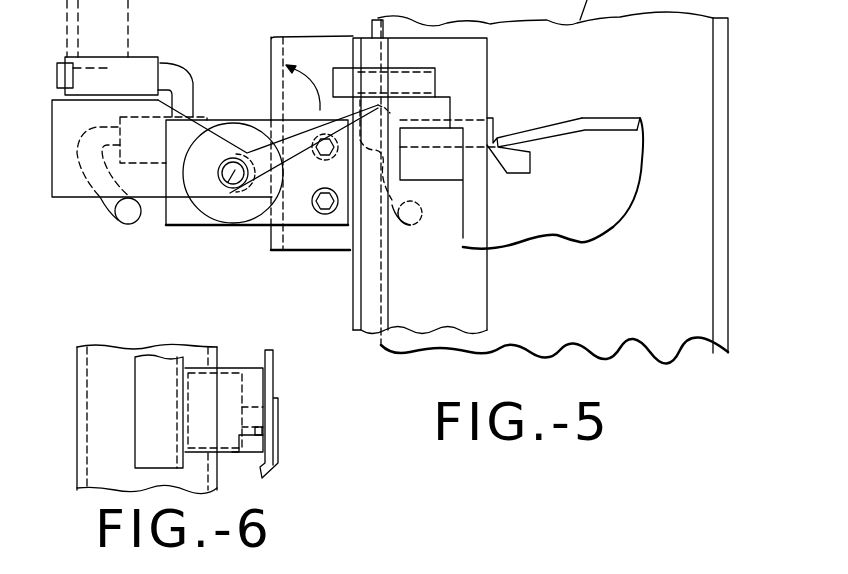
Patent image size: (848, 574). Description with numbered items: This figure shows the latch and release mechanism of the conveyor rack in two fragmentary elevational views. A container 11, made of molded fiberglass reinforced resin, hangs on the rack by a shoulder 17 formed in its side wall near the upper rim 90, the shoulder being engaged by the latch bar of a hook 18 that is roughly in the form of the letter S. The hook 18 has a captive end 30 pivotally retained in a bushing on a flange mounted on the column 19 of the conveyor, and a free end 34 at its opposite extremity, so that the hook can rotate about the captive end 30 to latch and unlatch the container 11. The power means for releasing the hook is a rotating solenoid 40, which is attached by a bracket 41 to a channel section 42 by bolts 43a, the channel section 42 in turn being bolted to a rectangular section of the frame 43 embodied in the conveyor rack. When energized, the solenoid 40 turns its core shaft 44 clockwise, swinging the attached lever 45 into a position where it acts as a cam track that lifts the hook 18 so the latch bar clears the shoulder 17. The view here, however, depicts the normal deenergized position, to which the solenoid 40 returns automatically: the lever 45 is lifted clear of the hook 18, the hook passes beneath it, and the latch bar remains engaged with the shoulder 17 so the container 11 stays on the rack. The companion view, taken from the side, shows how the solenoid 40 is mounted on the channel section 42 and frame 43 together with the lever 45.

In FIG. 5, the container 11 is at (613, 227).
In FIG. 5, the shoulder 17 is at (498, 140).
In FIG. 5, the hook 18 is at (437, 78).
In FIG. 5, the column 19 is at (351, 297).
In FIG. 5, the captive end 30 is at (487, 43).
In FIG. 5, the free end 34 is at (413, 225).
In FIG. 5, the rotating solenoid 40 is at (228, 133).
In FIG. 6, the rotating solenoid 40 is at (228, 390).
In FIG. 5, the bracket 41 is at (300, 213).
In FIG. 5, the channel section 42 is at (318, 70).
In FIG. 6, the channel section 42 is at (152, 430).
In FIG. 6, the frame 43 is at (102, 353).
In FIG. 5, the bolts 43a is at (348, 250).
In FIG. 5, the core shaft 44 is at (235, 176).
In FIG. 5, the lever 45 is at (282, 90).
In FIG. 6, the lever 45 is at (278, 450).
In FIG. 5, the upper rim 90 is at (587, 118).